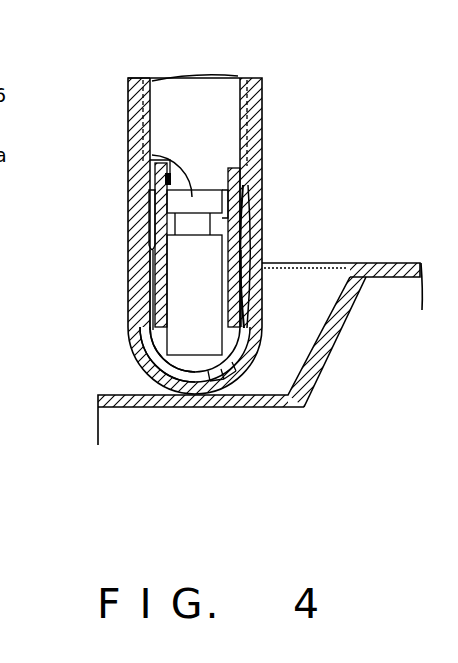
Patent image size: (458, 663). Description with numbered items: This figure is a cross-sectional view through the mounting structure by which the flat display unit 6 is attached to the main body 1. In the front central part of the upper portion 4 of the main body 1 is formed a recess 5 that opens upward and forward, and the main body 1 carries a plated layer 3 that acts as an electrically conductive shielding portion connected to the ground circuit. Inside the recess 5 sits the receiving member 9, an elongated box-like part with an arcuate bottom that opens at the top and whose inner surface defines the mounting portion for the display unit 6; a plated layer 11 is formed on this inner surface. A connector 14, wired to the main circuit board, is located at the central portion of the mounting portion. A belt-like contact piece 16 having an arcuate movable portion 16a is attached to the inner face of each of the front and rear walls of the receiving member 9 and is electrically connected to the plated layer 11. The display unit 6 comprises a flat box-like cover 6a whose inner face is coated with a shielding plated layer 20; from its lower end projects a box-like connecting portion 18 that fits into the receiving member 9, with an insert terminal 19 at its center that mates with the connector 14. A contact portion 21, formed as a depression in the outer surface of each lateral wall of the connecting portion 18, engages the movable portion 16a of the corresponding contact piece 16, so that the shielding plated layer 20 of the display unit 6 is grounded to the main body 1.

The main body 1 is at (388, 237).
The plated layer 3 is at (316, 372).
The upper portion 4 is at (414, 262).
The recess 5 is at (341, 282).
The flat display unit 6 is at (263, 118).
The cover 6a is at (253, 150).
The receiving member 9 is at (250, 218).
The plated layer 11 is at (230, 357).
The connector 14 is at (193, 345).
The contact piece 16 is at (132, 217).
The movable portion 16a is at (263, 262).
The connecting portion 18 is at (150, 346).
The insert terminal 19 is at (150, 157).
The plated layer 20 is at (135, 122).
The contact portion 21 is at (150, 316).